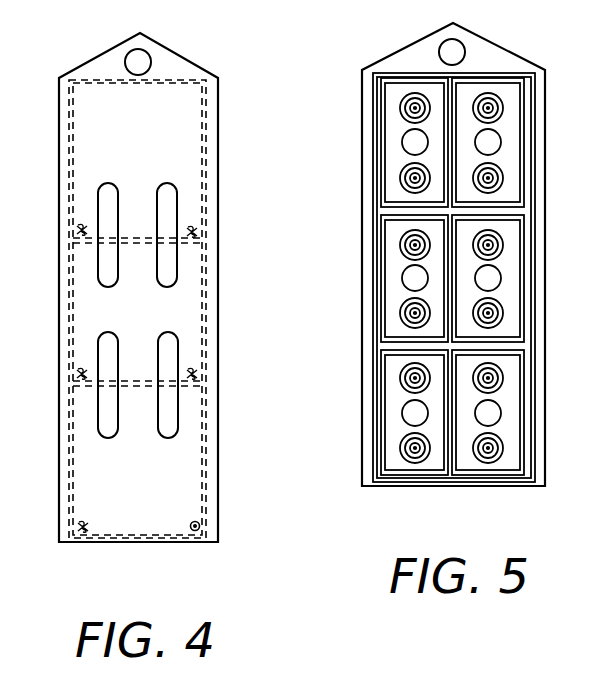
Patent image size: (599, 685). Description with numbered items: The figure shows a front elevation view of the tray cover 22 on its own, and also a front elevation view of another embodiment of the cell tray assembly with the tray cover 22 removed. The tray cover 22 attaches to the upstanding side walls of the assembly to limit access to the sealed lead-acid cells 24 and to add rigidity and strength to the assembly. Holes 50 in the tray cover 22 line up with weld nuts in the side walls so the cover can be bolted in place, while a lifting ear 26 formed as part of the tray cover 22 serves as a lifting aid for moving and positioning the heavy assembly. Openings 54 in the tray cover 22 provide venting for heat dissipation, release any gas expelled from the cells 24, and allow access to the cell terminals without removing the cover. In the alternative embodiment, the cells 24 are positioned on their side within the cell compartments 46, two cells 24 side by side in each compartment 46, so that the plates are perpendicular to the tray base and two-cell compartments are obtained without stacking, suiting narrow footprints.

In FIG. 4, the tray cover 22 is at (122, 499).
In FIG. 5, the sealed lead-acid cell 24 is at (396, 447).
In FIG. 4, the lifting ear 26 is at (172, 65).
In FIG. 5, the lifting ear 26 is at (420, 58).
In FIG. 5, the cell compartment 46 is at (405, 400).
In FIG. 4, the hole 50 is at (84, 532).
In FIG. 4, the opening 54 is at (109, 347).